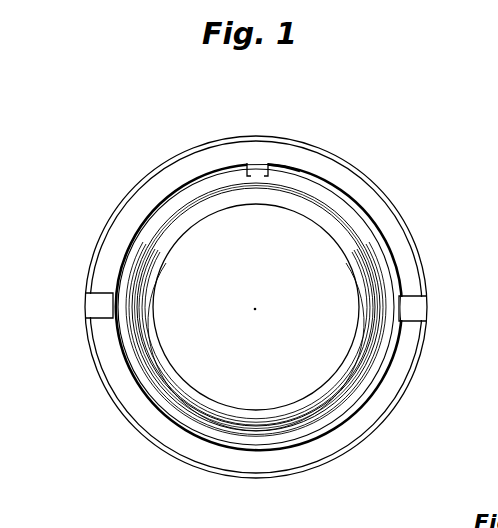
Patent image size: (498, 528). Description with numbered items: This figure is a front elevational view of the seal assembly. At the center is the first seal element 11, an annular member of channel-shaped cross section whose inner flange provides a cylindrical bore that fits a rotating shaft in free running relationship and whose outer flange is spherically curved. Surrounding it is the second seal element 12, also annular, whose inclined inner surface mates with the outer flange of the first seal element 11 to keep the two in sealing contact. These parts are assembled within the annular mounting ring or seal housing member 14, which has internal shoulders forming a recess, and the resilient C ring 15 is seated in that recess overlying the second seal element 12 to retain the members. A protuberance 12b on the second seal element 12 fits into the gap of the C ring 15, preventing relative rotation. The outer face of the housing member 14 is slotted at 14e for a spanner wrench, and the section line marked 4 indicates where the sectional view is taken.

The first seal element 11 is at (160, 272).
The second seal element 12 is at (175, 205).
The protuberance 12b is at (250, 162).
The mounting ring or seal housing member 14 is at (183, 164).
The slot 14e is at (89, 316).
The C ring 15 is at (287, 166).
The section line 4- 4 is at (259, 128).